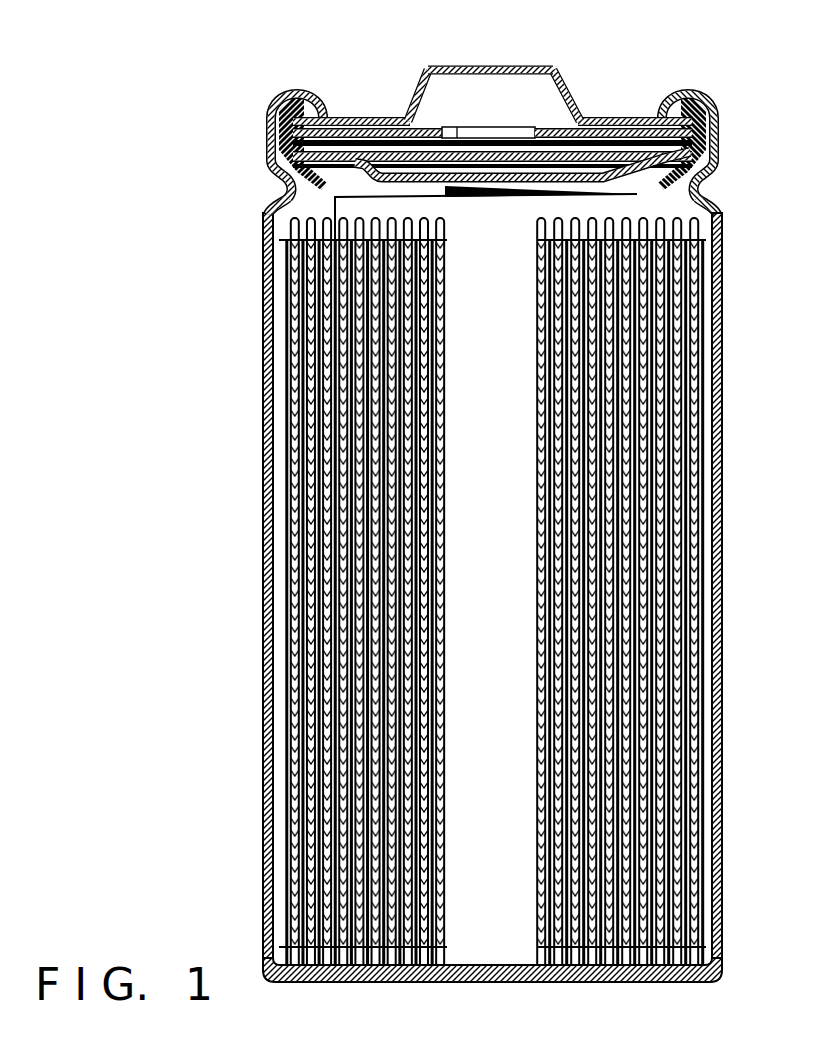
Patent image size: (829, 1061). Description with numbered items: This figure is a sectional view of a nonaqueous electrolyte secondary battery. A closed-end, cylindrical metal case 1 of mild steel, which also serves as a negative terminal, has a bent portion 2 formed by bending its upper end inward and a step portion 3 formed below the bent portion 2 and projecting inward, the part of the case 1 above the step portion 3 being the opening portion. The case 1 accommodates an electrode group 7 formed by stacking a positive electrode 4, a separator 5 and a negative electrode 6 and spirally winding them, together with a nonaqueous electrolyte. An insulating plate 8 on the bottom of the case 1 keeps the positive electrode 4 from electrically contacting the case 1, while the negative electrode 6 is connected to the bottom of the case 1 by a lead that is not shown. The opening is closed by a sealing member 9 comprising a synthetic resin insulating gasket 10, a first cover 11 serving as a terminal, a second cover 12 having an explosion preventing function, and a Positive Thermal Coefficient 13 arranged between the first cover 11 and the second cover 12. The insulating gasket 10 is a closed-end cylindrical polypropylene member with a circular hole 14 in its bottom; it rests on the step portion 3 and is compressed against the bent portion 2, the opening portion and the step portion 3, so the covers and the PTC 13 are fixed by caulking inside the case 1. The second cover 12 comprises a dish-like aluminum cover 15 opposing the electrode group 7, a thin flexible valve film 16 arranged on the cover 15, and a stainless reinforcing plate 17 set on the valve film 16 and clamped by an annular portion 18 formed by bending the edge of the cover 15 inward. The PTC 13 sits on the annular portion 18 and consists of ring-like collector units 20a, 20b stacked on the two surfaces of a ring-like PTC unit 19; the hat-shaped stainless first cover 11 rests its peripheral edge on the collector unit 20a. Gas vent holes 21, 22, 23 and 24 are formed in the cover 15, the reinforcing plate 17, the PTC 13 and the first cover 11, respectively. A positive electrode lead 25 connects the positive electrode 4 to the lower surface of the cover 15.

The case 1 is at (720, 445).
The bent portion 2 is at (700, 100).
The step portion 3 is at (706, 190).
The positive electrode 4 is at (762, 864).
The separator 5 is at (690, 910).
The negative electrode 6 is at (700, 883).
The electrode group 7 is at (536, 591).
The insulating plate 8 is at (488, 963).
The sealing member 9 is at (492, 61).
The insulating gasket 10 is at (267, 122).
The first cover 11 is at (476, 65).
The second cover 12 is at (722, 133).
The Positive Thermal Coefficient (PTC) 13 is at (623, 91).
The circular hole 14 is at (717, 213).
The cover 15 is at (281, 183).
The valve film 16 is at (393, 150).
The reinforcing plate 17 is at (300, 152).
The annular portion 18 is at (325, 113).
The PTC unit 19 is at (620, 140).
The collector unit 20a is at (587, 128).
The collector unit 20b is at (568, 63).
The gas vent hole 21 is at (496, 182).
The gas vent hole 22 is at (453, 141).
The gas vent hole 23 is at (497, 130).
The gas vent hole 24 is at (421, 68).
The positive electrode lead 25 is at (374, 197).